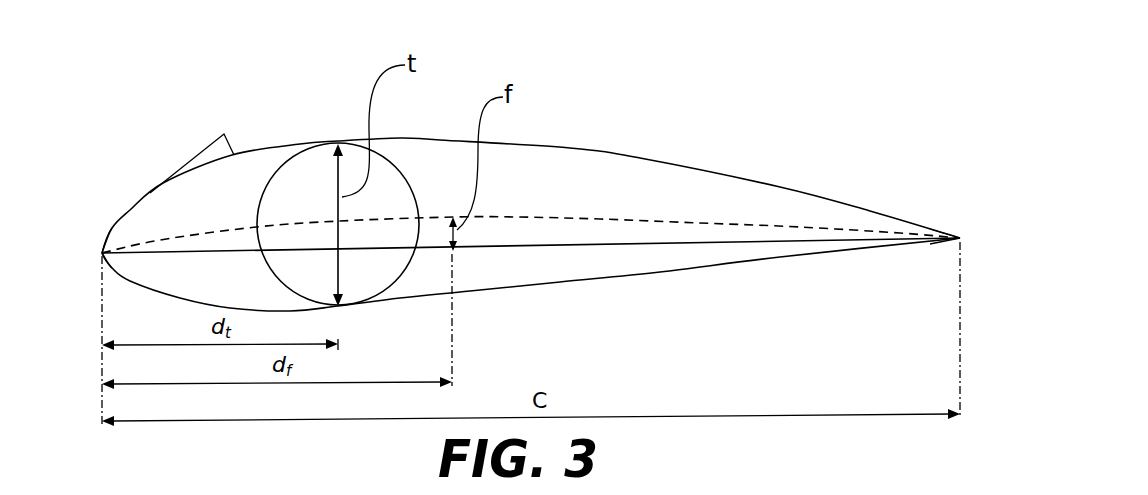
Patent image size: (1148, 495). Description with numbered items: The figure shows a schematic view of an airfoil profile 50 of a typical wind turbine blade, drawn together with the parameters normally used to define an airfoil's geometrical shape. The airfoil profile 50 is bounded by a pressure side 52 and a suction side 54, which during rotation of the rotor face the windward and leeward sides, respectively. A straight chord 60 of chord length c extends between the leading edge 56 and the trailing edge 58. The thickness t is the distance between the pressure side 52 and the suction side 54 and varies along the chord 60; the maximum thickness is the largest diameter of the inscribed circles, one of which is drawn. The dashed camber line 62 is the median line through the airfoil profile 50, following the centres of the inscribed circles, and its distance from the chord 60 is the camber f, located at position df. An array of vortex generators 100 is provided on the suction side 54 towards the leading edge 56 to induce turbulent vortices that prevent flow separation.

The airfoil profile 50 is at (501, 165).
The pressure side 52 is at (703, 268).
The suction side 54 is at (640, 158).
The leading edge 56 is at (102, 252).
The trailing edge 58 is at (960, 237).
The chord 60 is at (792, 242).
The camber line 62 is at (518, 217).
The vortex generators 100 is at (217, 139).